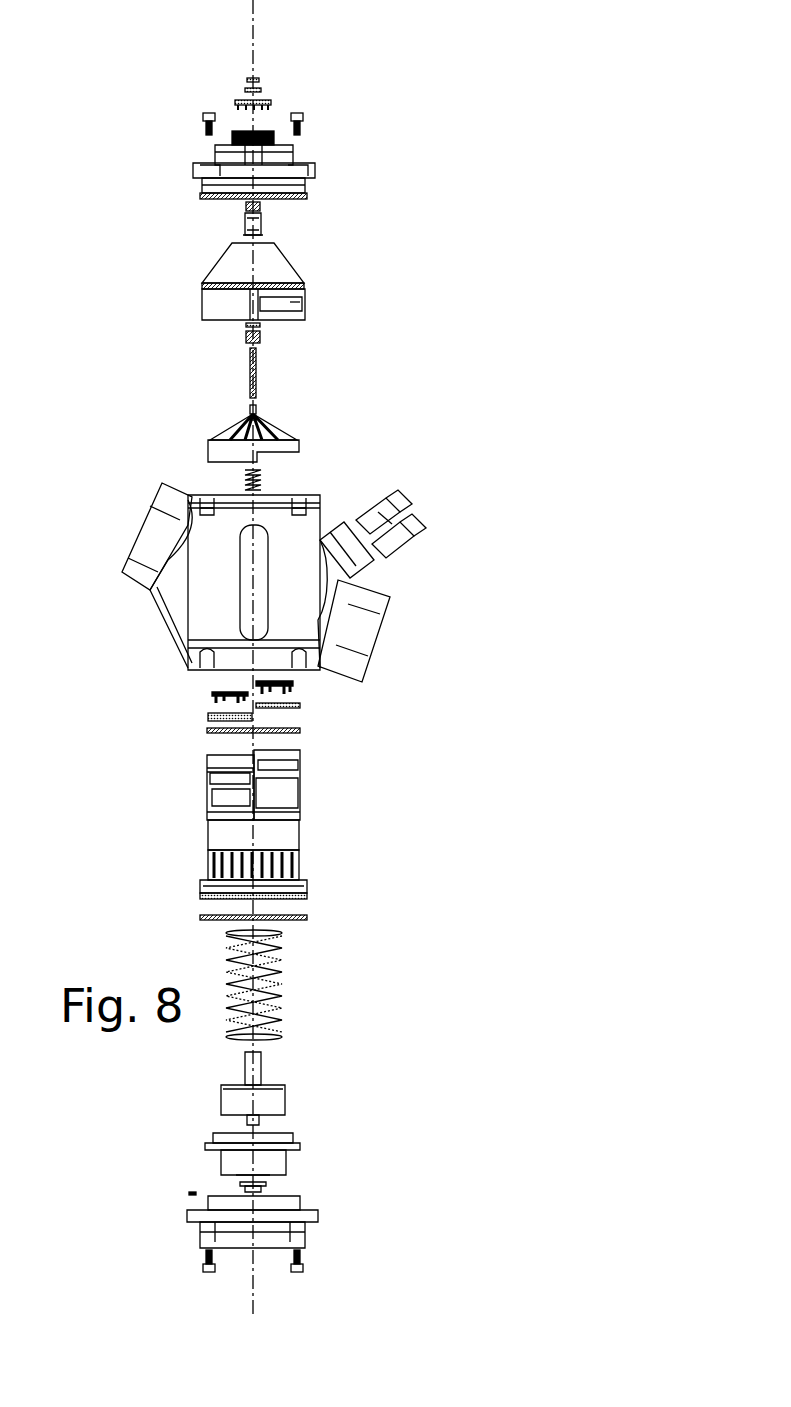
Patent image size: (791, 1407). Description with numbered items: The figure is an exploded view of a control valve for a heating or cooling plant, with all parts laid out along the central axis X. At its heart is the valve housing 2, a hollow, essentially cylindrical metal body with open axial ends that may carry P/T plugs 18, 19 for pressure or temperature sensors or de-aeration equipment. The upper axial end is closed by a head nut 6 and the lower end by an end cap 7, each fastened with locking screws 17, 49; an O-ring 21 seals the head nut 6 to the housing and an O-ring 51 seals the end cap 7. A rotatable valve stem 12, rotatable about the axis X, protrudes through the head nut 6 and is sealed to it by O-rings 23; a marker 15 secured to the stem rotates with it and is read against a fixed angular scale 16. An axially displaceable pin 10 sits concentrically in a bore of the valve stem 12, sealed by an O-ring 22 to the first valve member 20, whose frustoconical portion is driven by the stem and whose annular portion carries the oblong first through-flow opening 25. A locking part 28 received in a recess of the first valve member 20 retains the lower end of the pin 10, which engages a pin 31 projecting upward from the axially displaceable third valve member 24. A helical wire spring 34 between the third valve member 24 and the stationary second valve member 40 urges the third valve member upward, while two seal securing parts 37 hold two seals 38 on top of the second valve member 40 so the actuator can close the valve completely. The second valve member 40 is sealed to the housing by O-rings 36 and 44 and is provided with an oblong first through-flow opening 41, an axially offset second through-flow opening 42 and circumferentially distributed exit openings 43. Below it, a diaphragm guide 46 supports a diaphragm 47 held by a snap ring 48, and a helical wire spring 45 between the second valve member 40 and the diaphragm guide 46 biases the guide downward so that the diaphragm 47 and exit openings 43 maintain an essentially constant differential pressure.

The central axis X is at (254, 24).
The valve housing 2 is at (195, 623).
The head nut 6 is at (205, 165).
The end cap 7 is at (305, 1233).
The pin 10 is at (258, 368).
The valve stem 12 is at (262, 220).
The marker 15 is at (260, 92).
The angular scale 16 is at (240, 102).
The locking screws 17 is at (304, 118).
The P/T plug 18 is at (387, 505).
The P/T plug 19 is at (403, 530).
The first valve member 20 is at (225, 265).
The O-ring 21 is at (200, 195).
The O-ring 22 is at (243, 325).
The O-rings 23 is at (246, 205).
The third valve member 24 is at (218, 448).
The first through-flow opening 25 is at (321, 316).
The locking part 28 is at (243, 337).
The pin 31 is at (258, 409).
The helical wire spring 34 is at (262, 481).
The O-ring 36 is at (208, 715).
The seal securing parts 37 is at (296, 684).
The seals 38 is at (290, 726).
The second valve member 40 is at (217, 836).
The first through-flow opening 41 is at (290, 764).
The second through-flow opening 42 is at (218, 774).
The exit openings 43 is at (298, 870).
The O-ring 44 is at (296, 913).
The helical wire spring 45 is at (272, 986).
The diaphragm guide 46 is at (278, 1103).
The diaphragm 47 is at (228, 1165).
The snap ring 48 is at (268, 1187).
The locking screws 49 is at (206, 1257).
The O-ring 51 is at (188, 1190).